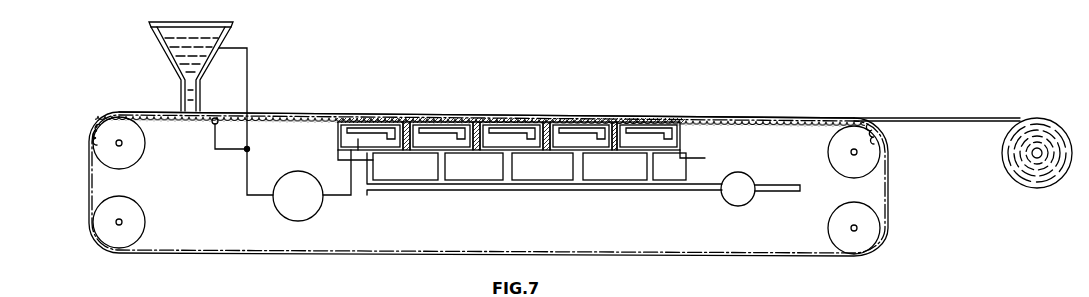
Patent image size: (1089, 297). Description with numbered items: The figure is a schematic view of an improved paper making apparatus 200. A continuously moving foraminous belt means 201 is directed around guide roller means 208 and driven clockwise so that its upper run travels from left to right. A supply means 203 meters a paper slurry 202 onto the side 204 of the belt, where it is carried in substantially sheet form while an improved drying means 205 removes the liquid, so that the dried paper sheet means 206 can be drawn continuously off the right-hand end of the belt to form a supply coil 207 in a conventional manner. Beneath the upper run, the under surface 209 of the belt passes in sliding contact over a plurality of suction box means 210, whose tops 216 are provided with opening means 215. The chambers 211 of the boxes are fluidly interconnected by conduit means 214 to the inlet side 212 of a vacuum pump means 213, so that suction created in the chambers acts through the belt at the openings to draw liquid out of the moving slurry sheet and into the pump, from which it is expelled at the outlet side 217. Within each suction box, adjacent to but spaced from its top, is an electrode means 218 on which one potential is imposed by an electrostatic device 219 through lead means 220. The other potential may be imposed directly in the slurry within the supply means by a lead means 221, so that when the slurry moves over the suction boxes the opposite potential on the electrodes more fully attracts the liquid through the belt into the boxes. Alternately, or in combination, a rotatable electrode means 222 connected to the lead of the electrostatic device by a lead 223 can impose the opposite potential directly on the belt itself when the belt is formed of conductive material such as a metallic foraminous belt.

The paper making apparatus 200 is at (830, 58).
The foraminous belt means 201 is at (150, 118).
The paper slurry 202 is at (183, 54).
The supply means 203 is at (233, 30).
The side of the belt 204 is at (110, 112).
The drying means 205 is at (698, 140).
The paper sheet means 206 is at (915, 118).
The supply coil 207 is at (1004, 150).
The guide roller means 208 is at (130, 160).
The under surface of the belt 209 is at (307, 118).
The suction box means 210 is at (338, 132).
The chambers of the suction box means 211 is at (362, 142).
The inlet side of the vacuum pump means 212 is at (728, 193).
The vacuum pump means 213 is at (742, 185).
The conduit means 214 is at (532, 190).
The opening means 215 is at (356, 118).
The tops of the suction box means 216 is at (372, 120).
The outlet side of the vacuum pump means 217 is at (772, 192).
The electrode means 218 is at (380, 140).
The electrostatic device 219 is at (306, 214).
The lead means 220 is at (338, 198).
The lead means 221 is at (245, 172).
The rotatable electrode means 222 is at (212, 123).
The lead 223 is at (240, 150).